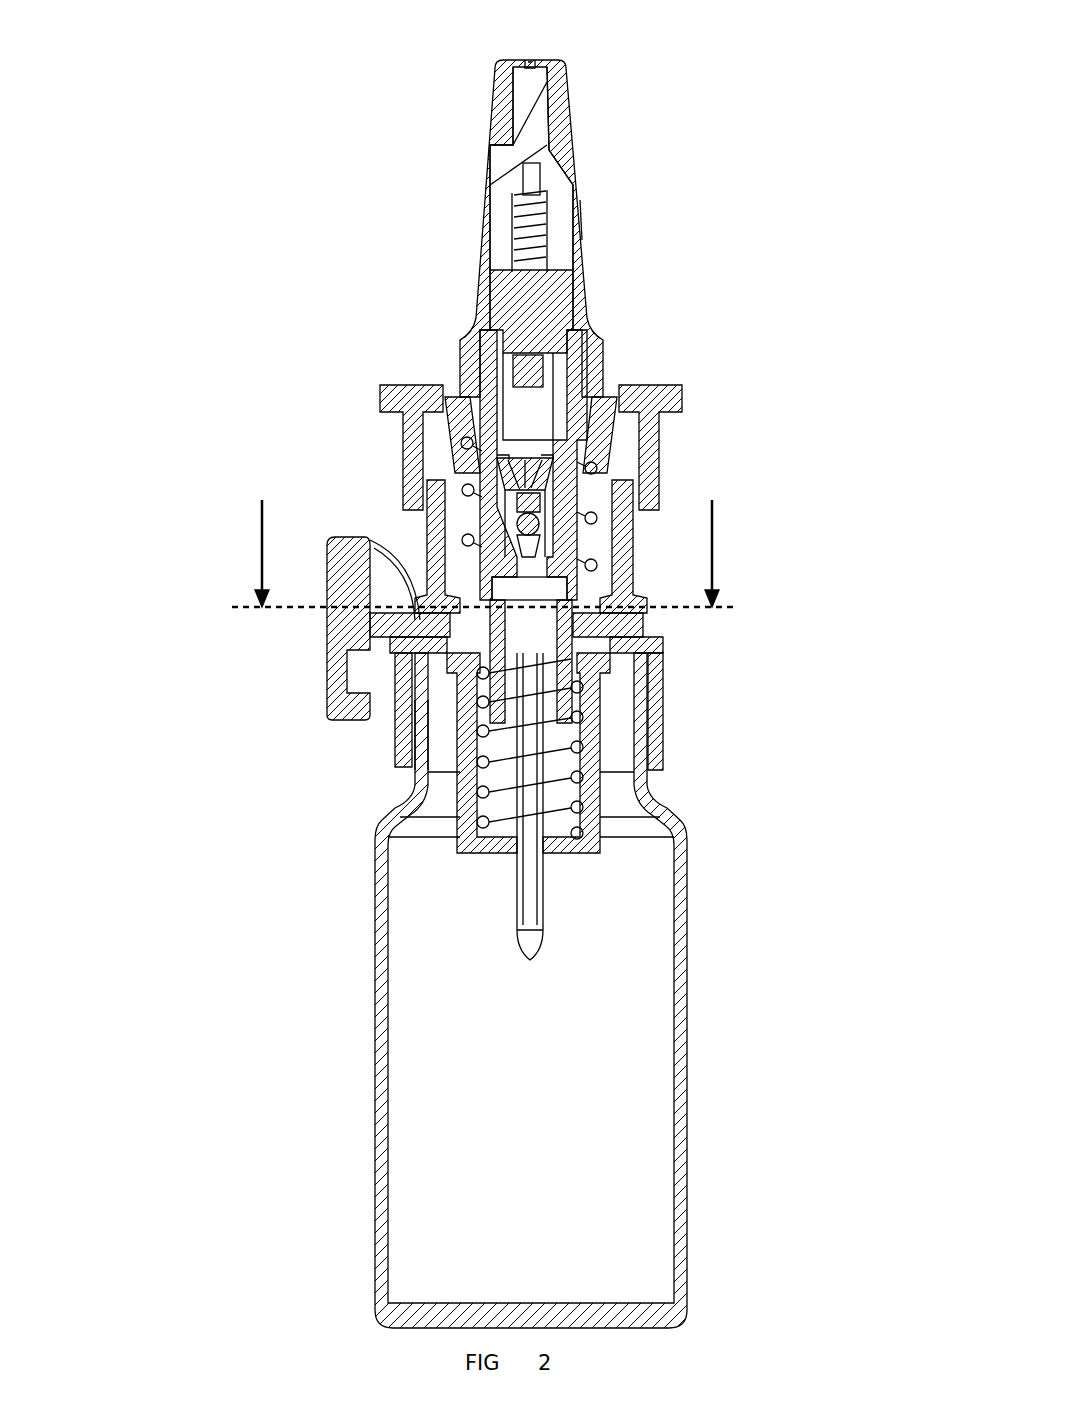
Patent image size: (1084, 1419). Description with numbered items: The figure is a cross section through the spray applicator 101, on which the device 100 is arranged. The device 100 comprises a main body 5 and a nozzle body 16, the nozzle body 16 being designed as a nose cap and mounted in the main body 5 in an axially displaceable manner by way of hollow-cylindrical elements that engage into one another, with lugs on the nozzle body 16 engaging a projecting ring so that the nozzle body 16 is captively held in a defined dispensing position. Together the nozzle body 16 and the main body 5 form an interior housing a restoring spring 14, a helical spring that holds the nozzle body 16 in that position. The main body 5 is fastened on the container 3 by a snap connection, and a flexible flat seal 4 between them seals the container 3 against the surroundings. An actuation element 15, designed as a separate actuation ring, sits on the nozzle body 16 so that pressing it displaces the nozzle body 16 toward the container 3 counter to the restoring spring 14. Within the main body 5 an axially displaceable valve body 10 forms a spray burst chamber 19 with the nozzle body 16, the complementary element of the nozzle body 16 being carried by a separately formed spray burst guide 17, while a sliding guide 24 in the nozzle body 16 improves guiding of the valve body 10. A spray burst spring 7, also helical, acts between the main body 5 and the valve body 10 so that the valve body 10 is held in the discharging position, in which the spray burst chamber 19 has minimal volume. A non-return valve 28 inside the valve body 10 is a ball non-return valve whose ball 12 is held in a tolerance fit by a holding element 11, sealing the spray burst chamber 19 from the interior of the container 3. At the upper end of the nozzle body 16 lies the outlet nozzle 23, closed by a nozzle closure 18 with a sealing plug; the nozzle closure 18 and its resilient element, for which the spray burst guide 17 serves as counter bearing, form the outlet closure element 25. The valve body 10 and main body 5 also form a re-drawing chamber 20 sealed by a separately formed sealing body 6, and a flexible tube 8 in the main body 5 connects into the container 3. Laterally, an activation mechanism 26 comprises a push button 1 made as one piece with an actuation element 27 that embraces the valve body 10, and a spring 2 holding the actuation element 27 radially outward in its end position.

The push button 1 is at (330, 543).
The spring 2 is at (428, 655).
The container 3 is at (375, 1188).
The flat seal 4 is at (420, 705).
The main body 5 is at (432, 715).
The sealing body 6 is at (563, 700).
The spray burst spring 7 is at (583, 780).
The flexible tube 8 is at (517, 892).
The valve body 10 is at (565, 455).
The holding element 11 is at (567, 477).
The ball 12 is at (540, 527).
The restoring spring 14 is at (467, 443).
The actuation element 15 is at (383, 398).
The nozzle body 16 is at (490, 106).
The spray burst guide 17 is at (548, 300).
The nozzle closure 18 is at (525, 150).
The spray burst chamber 19 is at (535, 418).
The re-drawing chamber 20 is at (527, 610).
The outlet nozzle 23 is at (530, 56).
The sliding guide 24 is at (592, 408).
The outlet closure element 25 is at (604, 202).
The activation mechanism 26 is at (232, 585).
The actuation element 27 is at (418, 617).
The non-return valve 28 is at (533, 517).
The device 100 is at (726, 372).
The spray applicator 101 is at (840, 84).